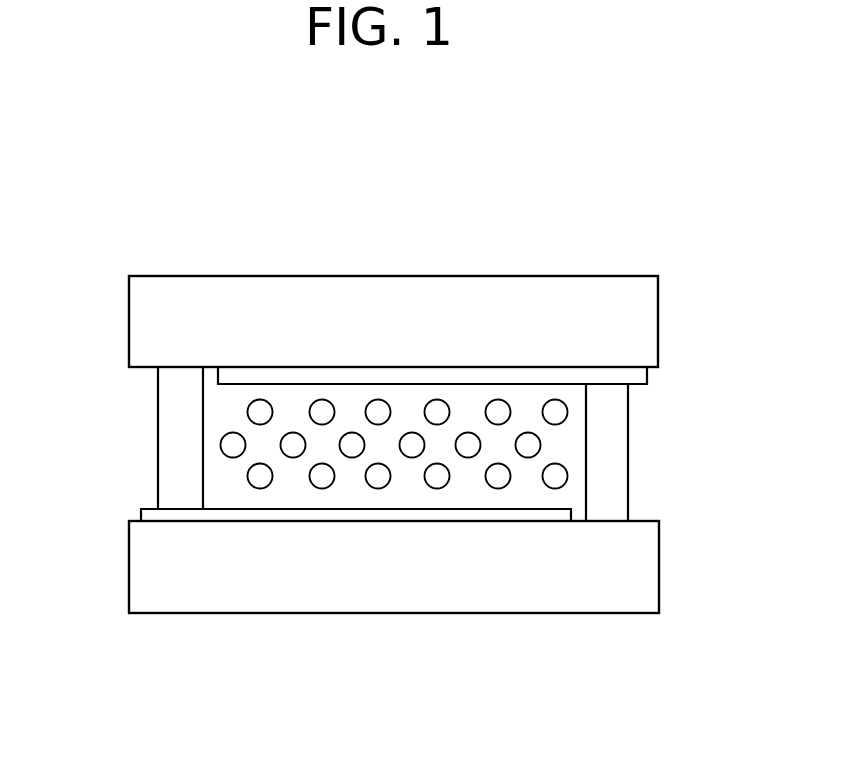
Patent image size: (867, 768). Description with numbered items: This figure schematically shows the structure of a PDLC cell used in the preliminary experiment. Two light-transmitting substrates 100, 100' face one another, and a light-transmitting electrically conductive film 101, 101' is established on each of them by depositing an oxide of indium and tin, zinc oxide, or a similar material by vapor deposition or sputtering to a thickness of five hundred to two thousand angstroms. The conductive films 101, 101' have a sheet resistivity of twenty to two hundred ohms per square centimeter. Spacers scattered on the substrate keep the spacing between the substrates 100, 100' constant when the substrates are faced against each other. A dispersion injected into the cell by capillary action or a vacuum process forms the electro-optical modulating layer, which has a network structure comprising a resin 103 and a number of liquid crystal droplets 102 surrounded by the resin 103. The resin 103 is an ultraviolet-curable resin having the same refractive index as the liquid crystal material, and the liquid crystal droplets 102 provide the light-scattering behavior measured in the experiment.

The light-transmitting substrate 100 is at (393, 264).
The light-transmitting substrate 100' is at (448, 567).
The light-transmitting electrically conductive film 101 is at (485, 362).
The light-transmitting electrically conductive film 101' is at (302, 473).
The liquid crystal droplets 102 is at (558, 475).
The resin 103 is at (220, 412).